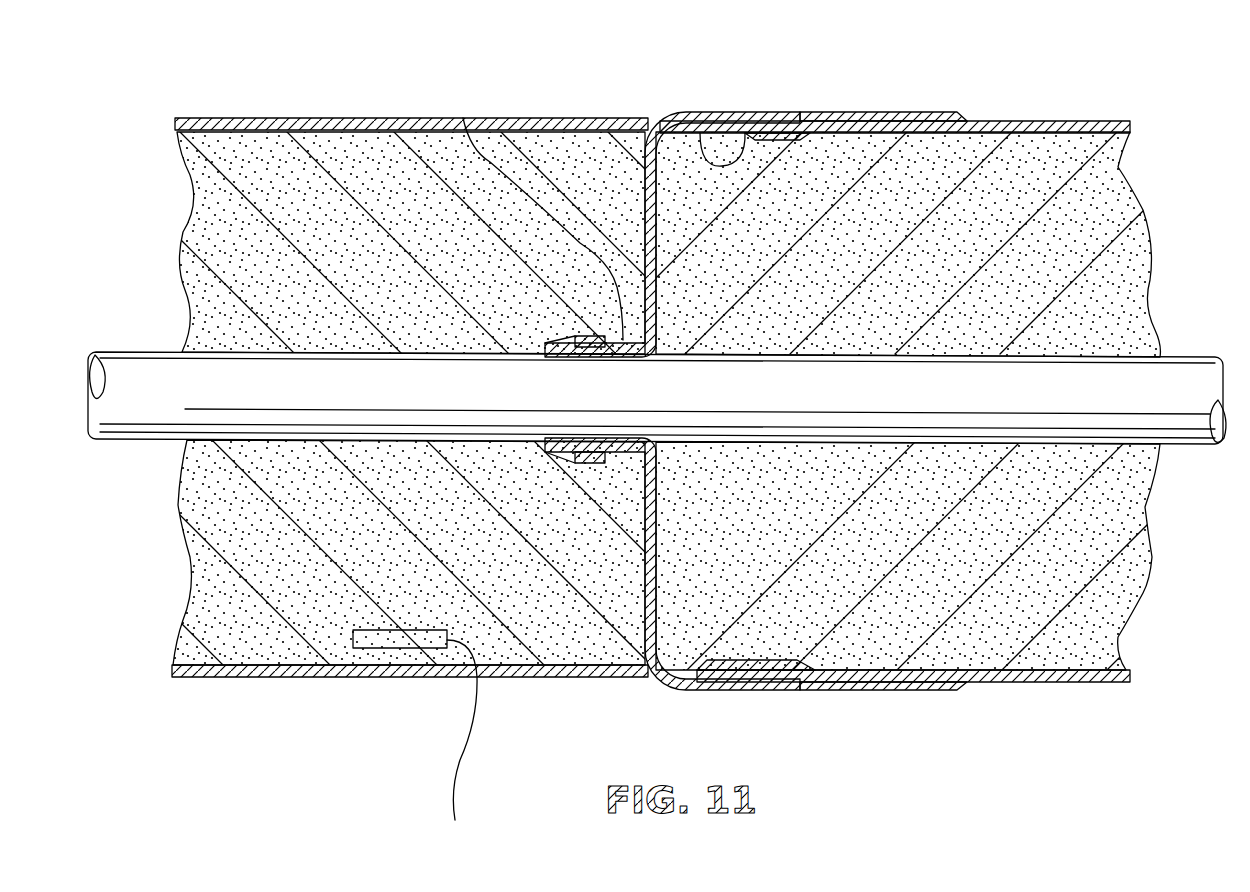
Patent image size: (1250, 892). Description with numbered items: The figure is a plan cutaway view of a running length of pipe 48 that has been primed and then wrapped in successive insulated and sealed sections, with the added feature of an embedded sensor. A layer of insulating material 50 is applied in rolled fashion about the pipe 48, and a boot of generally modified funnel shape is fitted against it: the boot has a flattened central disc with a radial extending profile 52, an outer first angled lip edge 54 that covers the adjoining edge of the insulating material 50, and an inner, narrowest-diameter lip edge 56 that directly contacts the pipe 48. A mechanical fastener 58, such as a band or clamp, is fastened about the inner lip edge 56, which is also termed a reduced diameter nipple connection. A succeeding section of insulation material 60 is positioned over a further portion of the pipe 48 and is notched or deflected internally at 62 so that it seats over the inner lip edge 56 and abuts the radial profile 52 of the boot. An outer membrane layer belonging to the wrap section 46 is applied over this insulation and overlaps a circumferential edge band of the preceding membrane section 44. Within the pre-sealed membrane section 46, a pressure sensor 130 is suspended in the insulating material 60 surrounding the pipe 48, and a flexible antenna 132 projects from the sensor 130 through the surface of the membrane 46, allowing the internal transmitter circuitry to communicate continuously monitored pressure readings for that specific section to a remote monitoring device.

The membrane section 44 is at (1000, 118).
The membrane section 46 is at (290, 118).
The pipe 48 is at (158, 372).
The insulating material 50 is at (1117, 202).
The radial extending profile 52 is at (640, 200).
The first angled lip edge 54 is at (738, 140).
The inner lip edge 56 is at (600, 357).
The mechanical fastener 58 is at (590, 337).
The insulation material 60 is at (220, 208).
The notch 62 is at (463, 118).
The sensor 130 is at (397, 650).
The flexible antenna 132 is at (457, 753).